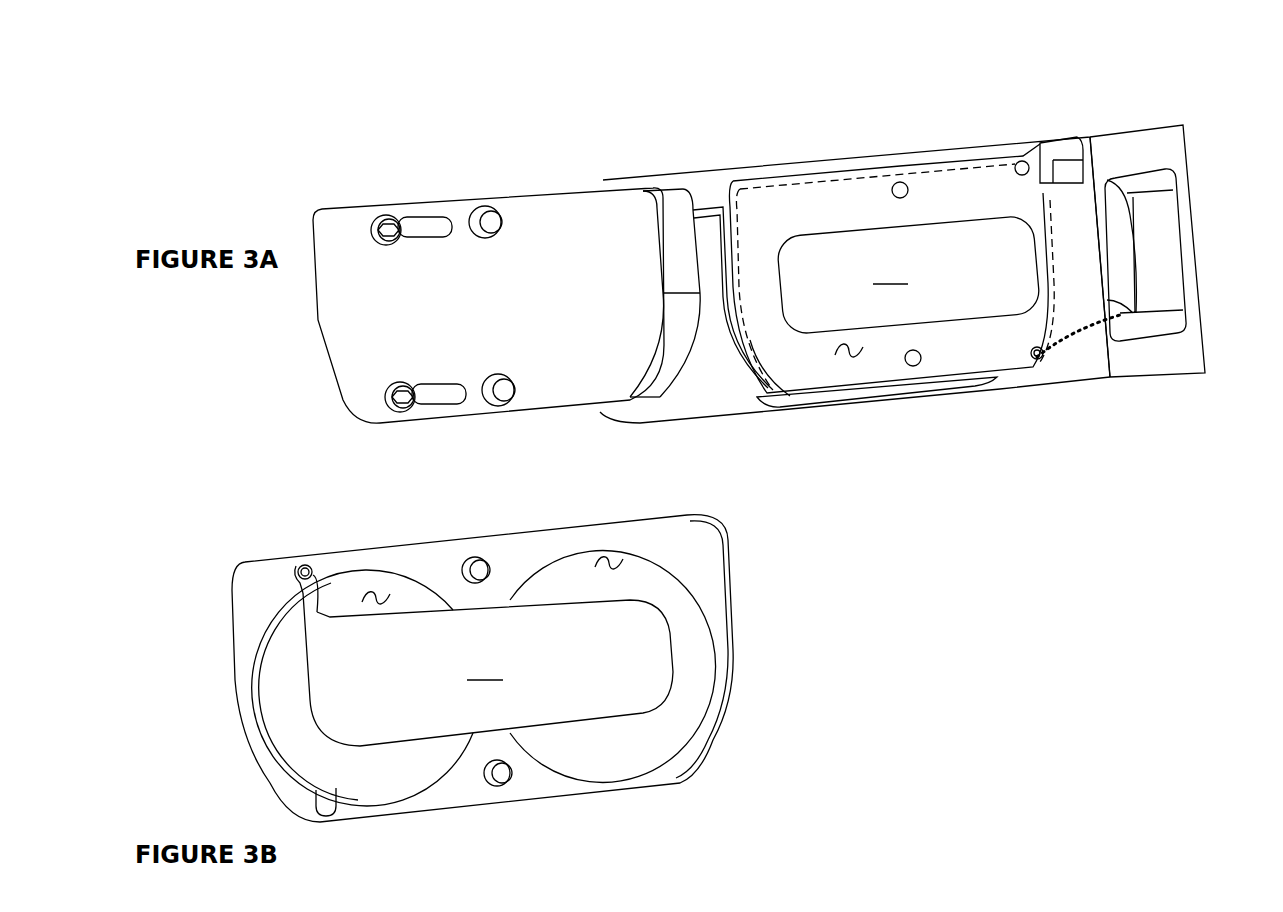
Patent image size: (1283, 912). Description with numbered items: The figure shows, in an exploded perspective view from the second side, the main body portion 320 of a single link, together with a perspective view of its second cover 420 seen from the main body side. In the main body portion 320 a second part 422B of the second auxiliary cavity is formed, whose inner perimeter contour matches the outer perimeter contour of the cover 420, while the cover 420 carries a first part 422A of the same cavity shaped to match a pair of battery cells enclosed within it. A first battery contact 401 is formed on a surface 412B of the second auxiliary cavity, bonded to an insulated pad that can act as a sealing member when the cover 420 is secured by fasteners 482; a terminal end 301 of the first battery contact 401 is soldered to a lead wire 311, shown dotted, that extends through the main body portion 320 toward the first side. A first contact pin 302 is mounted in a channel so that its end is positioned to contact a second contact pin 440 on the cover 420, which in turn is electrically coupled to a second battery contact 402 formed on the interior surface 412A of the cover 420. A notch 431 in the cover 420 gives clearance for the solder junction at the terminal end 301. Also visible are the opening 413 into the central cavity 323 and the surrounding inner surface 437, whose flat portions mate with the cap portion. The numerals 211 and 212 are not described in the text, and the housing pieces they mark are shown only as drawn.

In FIG. 3A, the main body portion 320 is at (463, 132).
In FIG. 3A, the second cover 420 is at (546, 198).
In FIG. 3B, the second cover 420 is at (240, 550).
In FIG. 3A, the housing 211 is at (646, 163).
In FIG. 3A, the first contact pin 302 is at (1012, 160).
In FIG. 3A, the opening 413 is at (1172, 172).
In FIG. 3A, the central cavity 323 is at (1118, 274).
In FIG. 3A, the inner surface 437 is at (1150, 298).
In FIG. 3A, the fasteners 482 is at (366, 246).
In FIG. 3A, the first battery contact 401 is at (891, 268).
In FIG. 3A, the surface of the second auxiliary cavity 412B is at (862, 354).
In FIG. 3A, the second part of the second auxiliary cavity 422B is at (816, 366).
In FIG. 3A, the terminal end 301 is at (1036, 366).
In FIG. 3A, the lead wire 311 is at (1073, 347).
In FIG. 3A, the end block 212 is at (1126, 400).
In FIG. 3B, the second contact pin 440 is at (294, 568).
In FIG. 3B, the interior surface 412A is at (605, 565).
In FIG. 3B, the second battery contact 402 is at (488, 669).
In FIG. 3B, the notch 431 is at (347, 808).
In FIG. 3B, the first part of the second auxiliary cavity 422A is at (690, 695).